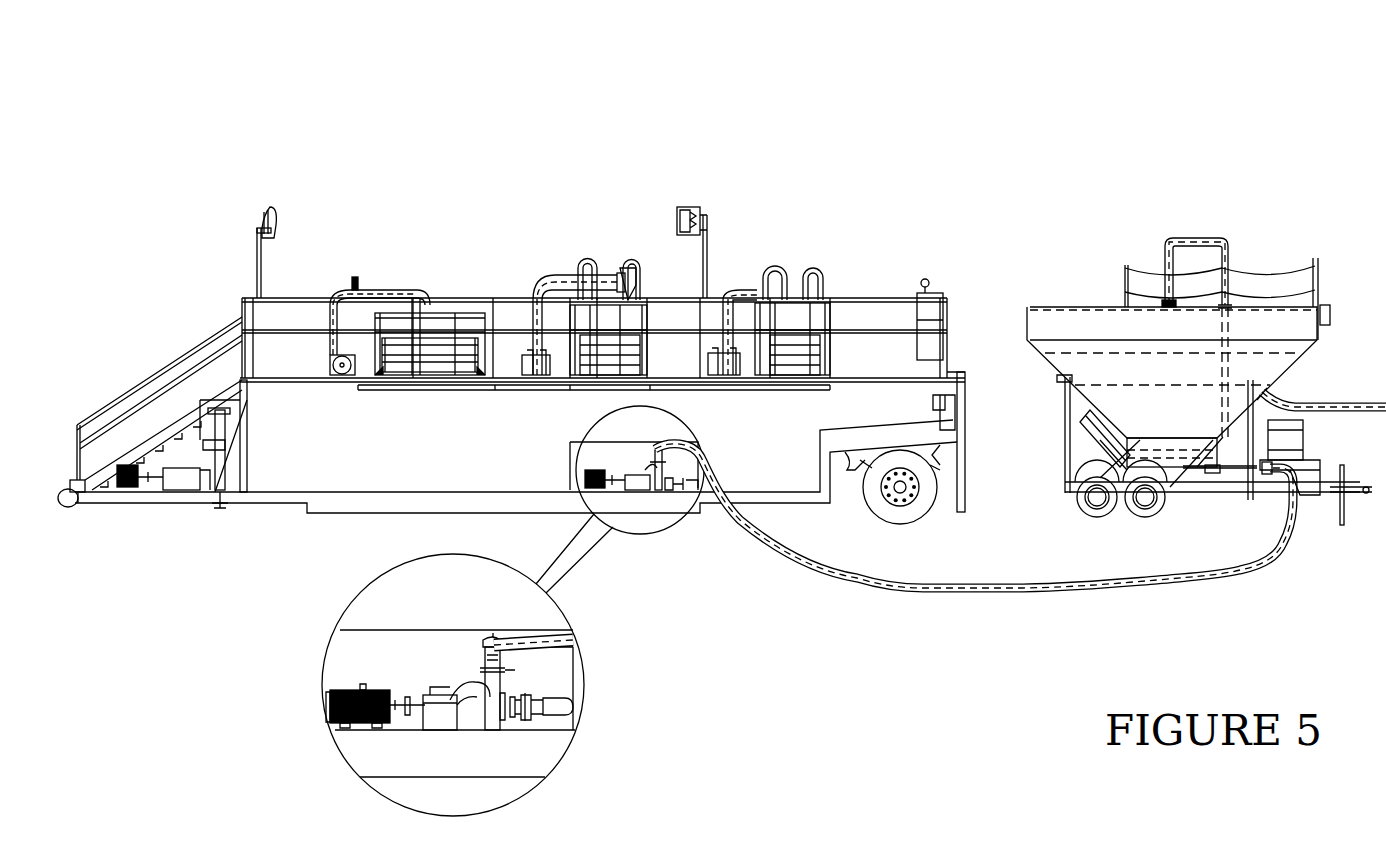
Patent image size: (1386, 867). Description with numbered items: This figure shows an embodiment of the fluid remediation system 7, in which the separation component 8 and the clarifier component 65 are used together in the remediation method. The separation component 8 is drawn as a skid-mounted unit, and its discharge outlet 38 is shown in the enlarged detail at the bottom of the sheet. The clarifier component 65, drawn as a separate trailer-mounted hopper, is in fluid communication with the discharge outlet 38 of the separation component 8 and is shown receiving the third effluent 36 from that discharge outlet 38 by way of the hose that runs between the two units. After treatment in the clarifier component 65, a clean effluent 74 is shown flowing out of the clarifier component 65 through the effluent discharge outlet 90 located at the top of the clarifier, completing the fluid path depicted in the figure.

The fluid remediation system 7 is at (151, 117).
The separation component 8 is at (348, 233).
The clarifier component 65 is at (1258, 236).
The clean effluent 74 is at (1165, 253).
The effluent discharge outlet 90 is at (1166, 303).
The discharge outlet 38 is at (485, 644).
The third effluent 36 is at (515, 642).